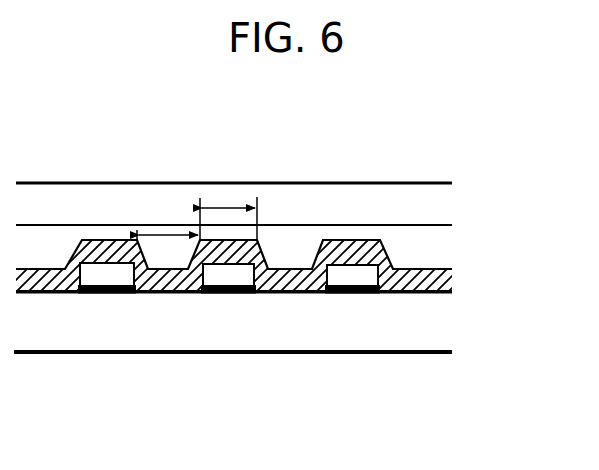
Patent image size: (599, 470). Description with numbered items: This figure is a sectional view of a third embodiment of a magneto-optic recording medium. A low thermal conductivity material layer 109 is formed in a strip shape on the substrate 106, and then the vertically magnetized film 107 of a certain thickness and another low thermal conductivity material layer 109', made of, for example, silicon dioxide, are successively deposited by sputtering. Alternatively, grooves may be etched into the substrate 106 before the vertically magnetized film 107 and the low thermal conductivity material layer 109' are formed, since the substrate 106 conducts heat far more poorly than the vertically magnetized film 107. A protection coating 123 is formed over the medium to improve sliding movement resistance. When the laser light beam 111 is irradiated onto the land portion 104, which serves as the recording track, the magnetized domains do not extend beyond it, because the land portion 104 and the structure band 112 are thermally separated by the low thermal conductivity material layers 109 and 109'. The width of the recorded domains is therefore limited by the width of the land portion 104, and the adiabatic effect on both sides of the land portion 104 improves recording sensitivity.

The land portion 104 is at (168, 232).
The structure band 112 is at (228, 196).
The low thermal conductivity material layer 109' is at (325, 198).
The protection coating 123 is at (427, 203).
The low thermal conductivity material layer 109 is at (280, 261).
The vertically magnetized film 107 is at (448, 273).
The substrate 106 is at (427, 323).
The laser light beam 111 is at (212, 295).